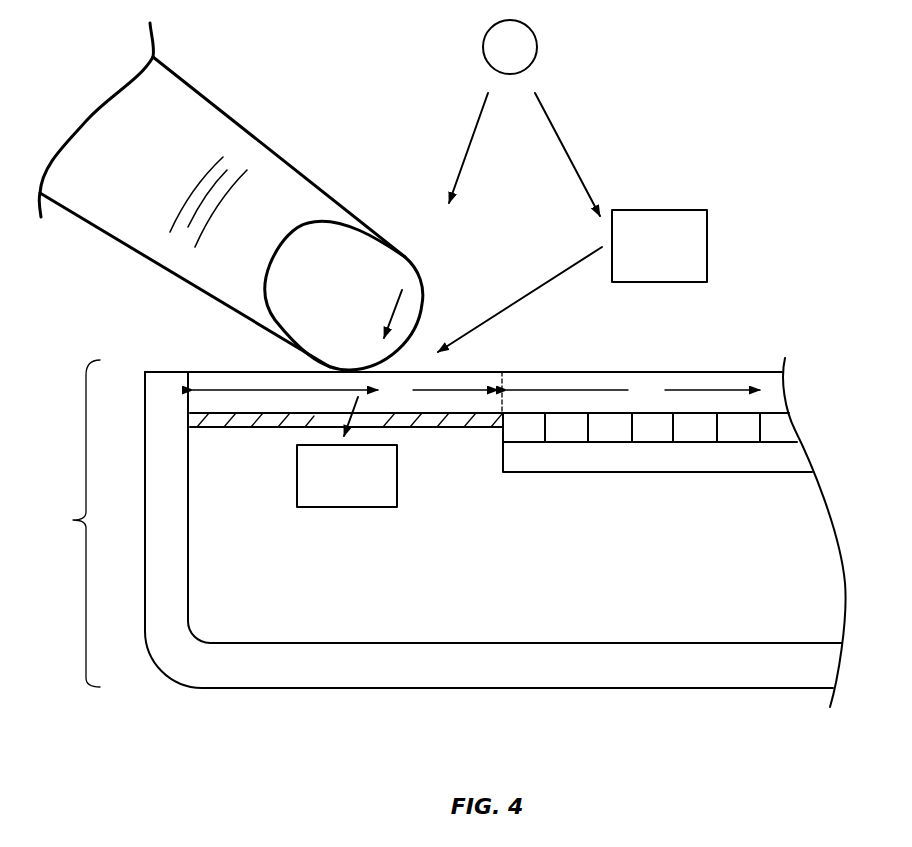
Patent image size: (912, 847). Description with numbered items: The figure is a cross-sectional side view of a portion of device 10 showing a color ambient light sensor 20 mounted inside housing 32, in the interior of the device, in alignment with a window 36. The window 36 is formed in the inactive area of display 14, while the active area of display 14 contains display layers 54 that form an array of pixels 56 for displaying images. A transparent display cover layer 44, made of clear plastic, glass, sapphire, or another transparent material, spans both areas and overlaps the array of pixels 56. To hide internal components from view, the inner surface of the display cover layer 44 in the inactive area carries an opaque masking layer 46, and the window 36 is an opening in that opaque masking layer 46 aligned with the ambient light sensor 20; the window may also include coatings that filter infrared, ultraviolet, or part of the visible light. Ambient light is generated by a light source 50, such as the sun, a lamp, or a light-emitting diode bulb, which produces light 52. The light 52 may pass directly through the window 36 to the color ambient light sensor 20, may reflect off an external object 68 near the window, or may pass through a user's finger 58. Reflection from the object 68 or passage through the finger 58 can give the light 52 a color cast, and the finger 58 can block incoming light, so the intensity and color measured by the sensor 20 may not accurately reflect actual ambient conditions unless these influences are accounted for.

The device 10 is at (73, 523).
The display 14 is at (729, 350).
The color ambient light sensor 20 is at (353, 495).
The housing 32 is at (418, 670).
The window 36 is at (346, 451).
The display cover layer 44 is at (557, 372).
The opaque masking layer 46 is at (245, 427).
The light source 50 is at (537, 43).
The light 52 is at (468, 138).
The display layers 54 is at (652, 473).
The pixels 56 is at (662, 430).
The finger 58 is at (157, 252).
The object 68 is at (707, 237).